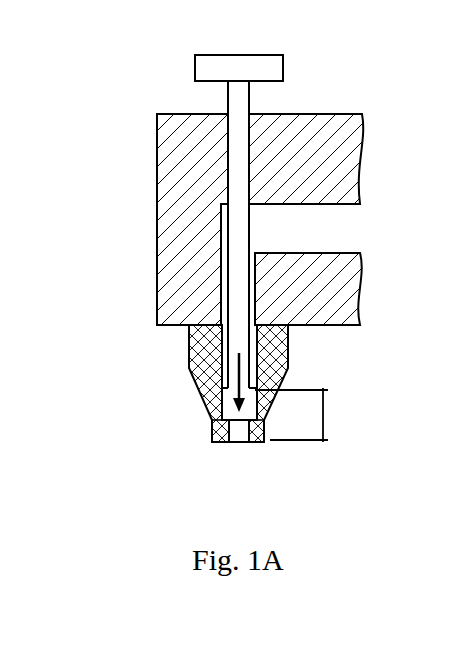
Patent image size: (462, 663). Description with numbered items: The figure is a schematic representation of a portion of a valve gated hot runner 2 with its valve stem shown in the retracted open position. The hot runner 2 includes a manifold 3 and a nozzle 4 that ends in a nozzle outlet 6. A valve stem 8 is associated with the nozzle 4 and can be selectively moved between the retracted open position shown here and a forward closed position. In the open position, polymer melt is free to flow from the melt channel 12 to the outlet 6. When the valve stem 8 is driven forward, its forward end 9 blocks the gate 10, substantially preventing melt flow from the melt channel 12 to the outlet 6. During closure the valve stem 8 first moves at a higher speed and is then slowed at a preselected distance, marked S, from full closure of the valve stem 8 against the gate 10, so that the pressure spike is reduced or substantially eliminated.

The valve gated hot runner 2 is at (106, 102).
The manifold 3 is at (352, 132).
The nozzle 4 is at (203, 398).
The nozzle outlet 6 is at (240, 443).
The valve stem 8 is at (213, 70).
The forward end 9 is at (200, 385).
The gate 10 is at (217, 432).
The melt channel 12 is at (305, 223).